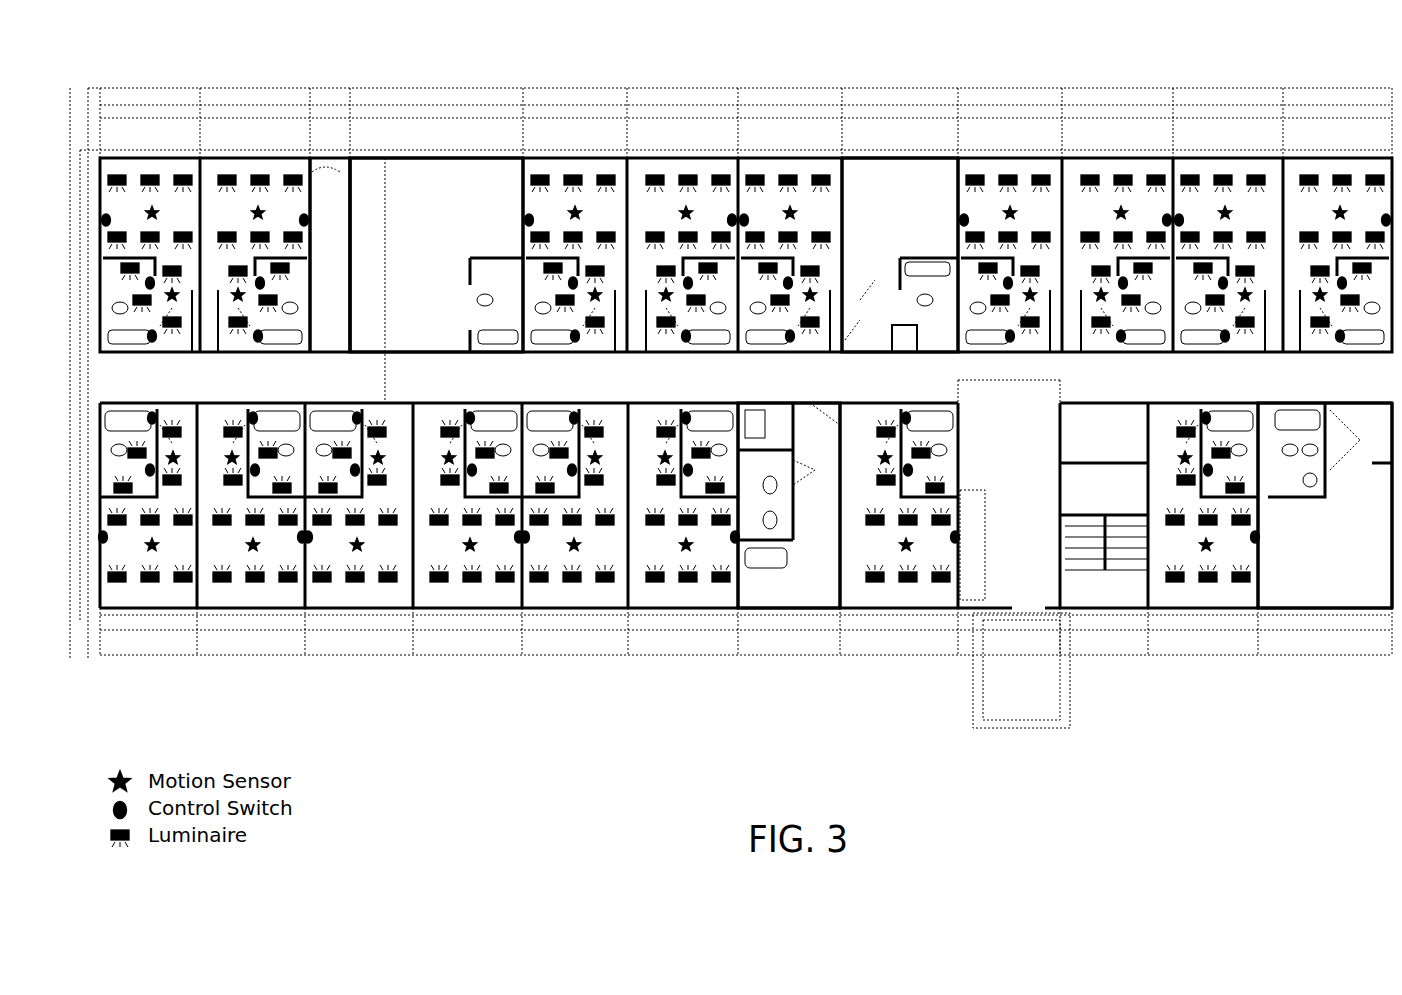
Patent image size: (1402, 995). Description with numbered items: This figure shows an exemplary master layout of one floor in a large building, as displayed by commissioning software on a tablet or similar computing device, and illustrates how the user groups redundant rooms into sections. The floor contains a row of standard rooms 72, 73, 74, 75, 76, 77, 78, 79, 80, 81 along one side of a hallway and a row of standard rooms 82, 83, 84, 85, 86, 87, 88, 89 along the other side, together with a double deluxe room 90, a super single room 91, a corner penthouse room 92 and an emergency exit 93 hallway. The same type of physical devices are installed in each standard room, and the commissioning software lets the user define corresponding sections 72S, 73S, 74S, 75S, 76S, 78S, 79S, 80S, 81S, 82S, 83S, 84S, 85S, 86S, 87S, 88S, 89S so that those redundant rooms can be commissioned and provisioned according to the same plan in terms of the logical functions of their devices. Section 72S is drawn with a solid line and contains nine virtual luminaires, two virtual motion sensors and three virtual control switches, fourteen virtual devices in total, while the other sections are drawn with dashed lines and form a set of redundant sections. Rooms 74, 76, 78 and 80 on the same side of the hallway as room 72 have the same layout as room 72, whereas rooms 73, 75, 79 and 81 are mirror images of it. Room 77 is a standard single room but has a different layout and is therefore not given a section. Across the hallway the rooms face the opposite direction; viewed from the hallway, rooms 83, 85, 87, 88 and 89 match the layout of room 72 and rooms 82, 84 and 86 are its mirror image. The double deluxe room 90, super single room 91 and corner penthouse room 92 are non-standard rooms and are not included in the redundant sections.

The standard room 72 is at (127, 180).
The section 72S is at (160, 150).
The standard room 73 is at (236, 180).
The section 73S is at (272, 150).
The standard room 74 is at (548, 175).
The section 74S is at (582, 150).
The standard room 75 is at (663, 175).
The section 75S is at (692, 150).
The standard room 76 is at (767, 175).
The section 76S is at (800, 150).
The standard single room 77 is at (876, 170).
The standard room 78 is at (979, 175).
The section 78S is at (1012, 150).
The standard room 79 is at (1085, 175).
The section 79S is at (1118, 150).
The standard room 80 is at (1196, 175).
The section 80S is at (1232, 150).
The standard room 81 is at (1310, 175).
The section 81S is at (1340, 150).
The standard room 82 is at (122, 597).
The section 82S is at (166, 612).
The standard room 83 is at (224, 597).
The section 83S is at (269, 612).
The standard room 84 is at (327, 597).
The section 84S is at (376, 612).
The standard room 85 is at (434, 597).
The section 85S is at (486, 612).
The standard room 86 is at (544, 597).
The section 86S is at (596, 612).
The standard room 87 is at (652, 597).
The section 87S is at (709, 612).
The standard room 88 is at (867, 597).
The section 88S is at (921, 612).
The standard room 89 is at (1170, 597).
The section 89S is at (1226, 612).
The double deluxe room 90 is at (432, 190).
The super single room 91 is at (805, 600).
The corner penthouse room 92 is at (1325, 600).
The emergency exit hallway 93 is at (327, 180).